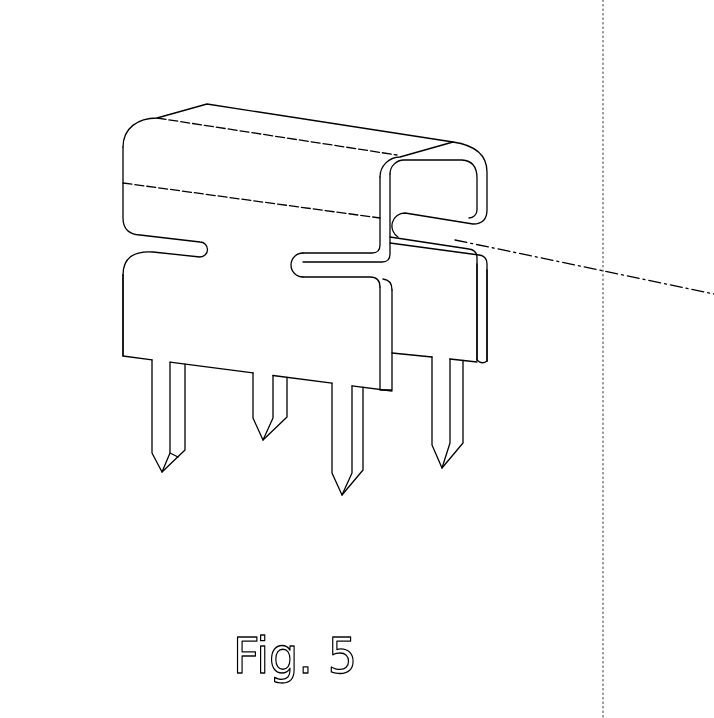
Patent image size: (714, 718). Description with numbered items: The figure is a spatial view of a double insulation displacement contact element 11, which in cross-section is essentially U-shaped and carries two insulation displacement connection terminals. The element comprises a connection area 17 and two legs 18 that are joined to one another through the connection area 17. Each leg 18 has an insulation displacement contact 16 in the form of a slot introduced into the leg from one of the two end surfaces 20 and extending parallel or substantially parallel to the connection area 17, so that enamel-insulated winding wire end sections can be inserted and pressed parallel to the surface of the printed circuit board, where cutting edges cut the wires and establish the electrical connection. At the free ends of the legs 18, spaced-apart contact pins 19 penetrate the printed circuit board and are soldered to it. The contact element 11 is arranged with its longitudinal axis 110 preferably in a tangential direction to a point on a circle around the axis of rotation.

The double insulation displacement contact element 11 is at (305, 303).
The insulation displacement contact 16 is at (134, 238).
The connection area 17 is at (303, 127).
The leg 18 is at (315, 363).
The contact pin 19 is at (153, 460).
The end surface 20 is at (125, 290).
The longitudinal axis 110 is at (600, 270).